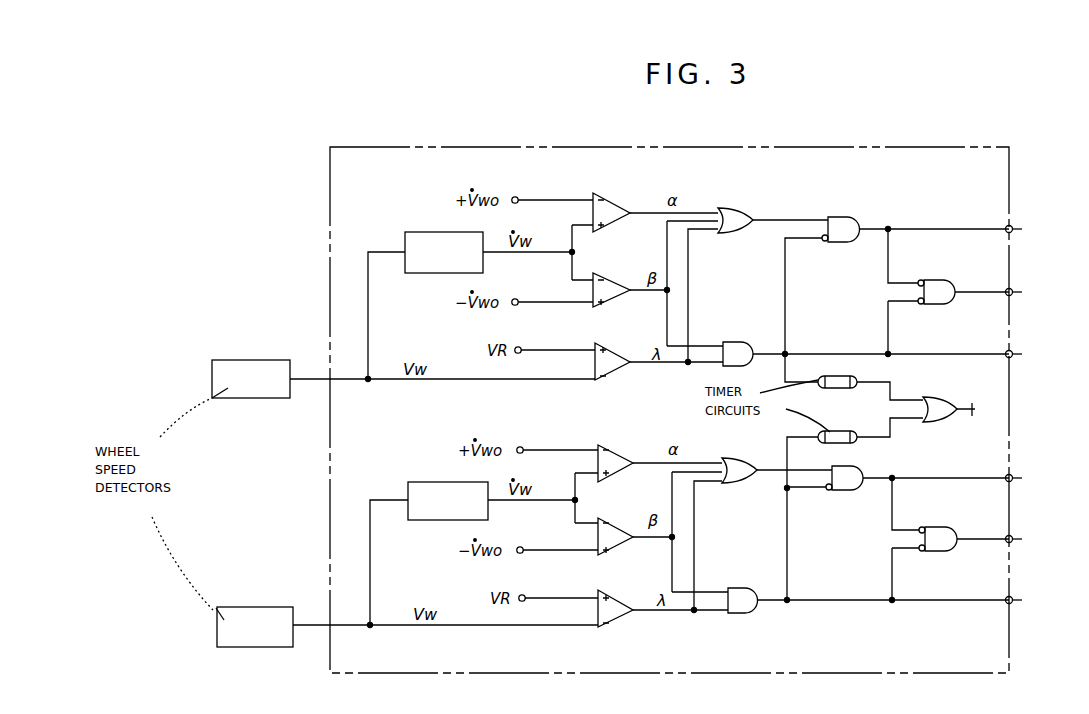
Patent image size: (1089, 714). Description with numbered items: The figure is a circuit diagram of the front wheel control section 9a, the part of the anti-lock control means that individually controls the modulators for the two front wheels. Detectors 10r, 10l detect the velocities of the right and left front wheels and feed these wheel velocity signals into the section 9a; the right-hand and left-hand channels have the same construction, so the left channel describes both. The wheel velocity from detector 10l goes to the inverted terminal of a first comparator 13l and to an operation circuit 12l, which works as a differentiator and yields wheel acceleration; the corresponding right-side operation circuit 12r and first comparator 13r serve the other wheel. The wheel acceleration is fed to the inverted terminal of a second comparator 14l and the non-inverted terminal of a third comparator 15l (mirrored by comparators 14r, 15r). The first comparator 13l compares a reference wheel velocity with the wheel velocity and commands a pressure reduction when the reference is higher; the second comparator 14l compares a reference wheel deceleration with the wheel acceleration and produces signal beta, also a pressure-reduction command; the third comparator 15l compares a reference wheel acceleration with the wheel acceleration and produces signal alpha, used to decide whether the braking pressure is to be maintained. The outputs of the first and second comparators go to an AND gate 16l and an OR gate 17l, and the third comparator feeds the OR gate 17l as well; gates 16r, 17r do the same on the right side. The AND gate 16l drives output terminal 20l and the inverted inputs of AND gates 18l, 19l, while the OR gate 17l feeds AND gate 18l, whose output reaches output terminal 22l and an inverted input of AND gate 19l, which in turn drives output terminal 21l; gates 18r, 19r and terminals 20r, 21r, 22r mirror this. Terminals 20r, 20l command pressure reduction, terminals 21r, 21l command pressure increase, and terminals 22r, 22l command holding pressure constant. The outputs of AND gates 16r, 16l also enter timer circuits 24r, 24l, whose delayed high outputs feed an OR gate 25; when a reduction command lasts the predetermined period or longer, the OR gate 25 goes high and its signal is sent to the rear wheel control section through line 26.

The front wheel control section 9a is at (482, 147).
The detector 10r is at (241, 367).
The detector 10l is at (244, 612).
The operation circuit 12r is at (420, 236).
The operation circuit 12l is at (428, 486).
The first comparator 13r is at (610, 346).
The first comparator 13l is at (616, 597).
The second comparator 14r is at (614, 278).
The second comparator 14l is at (616, 525).
The third comparator 15r is at (610, 198).
The third comparator 15l is at (614, 450).
The AND gate 16r is at (735, 342).
The AND gate 16l is at (745, 588).
The OR gate 17r is at (731, 208).
The OR gate 17l is at (741, 457).
The AND gate 18r is at (841, 213).
The AND gate 18l is at (847, 491).
The AND gate 19r is at (936, 280).
The AND gate 19l is at (940, 527).
The output terminal 20r is at (1030, 355).
The output terminal 20l is at (1029, 601).
The output terminal 21r is at (1030, 293).
The output terminal 21l is at (1029, 540).
The output terminal 22r is at (1030, 230).
The output terminal 22l is at (1029, 479).
The timer circuit 24r is at (843, 389).
The timer circuit 24l is at (832, 443).
The OR gate 25 is at (940, 397).
The line 26 is at (969, 414).